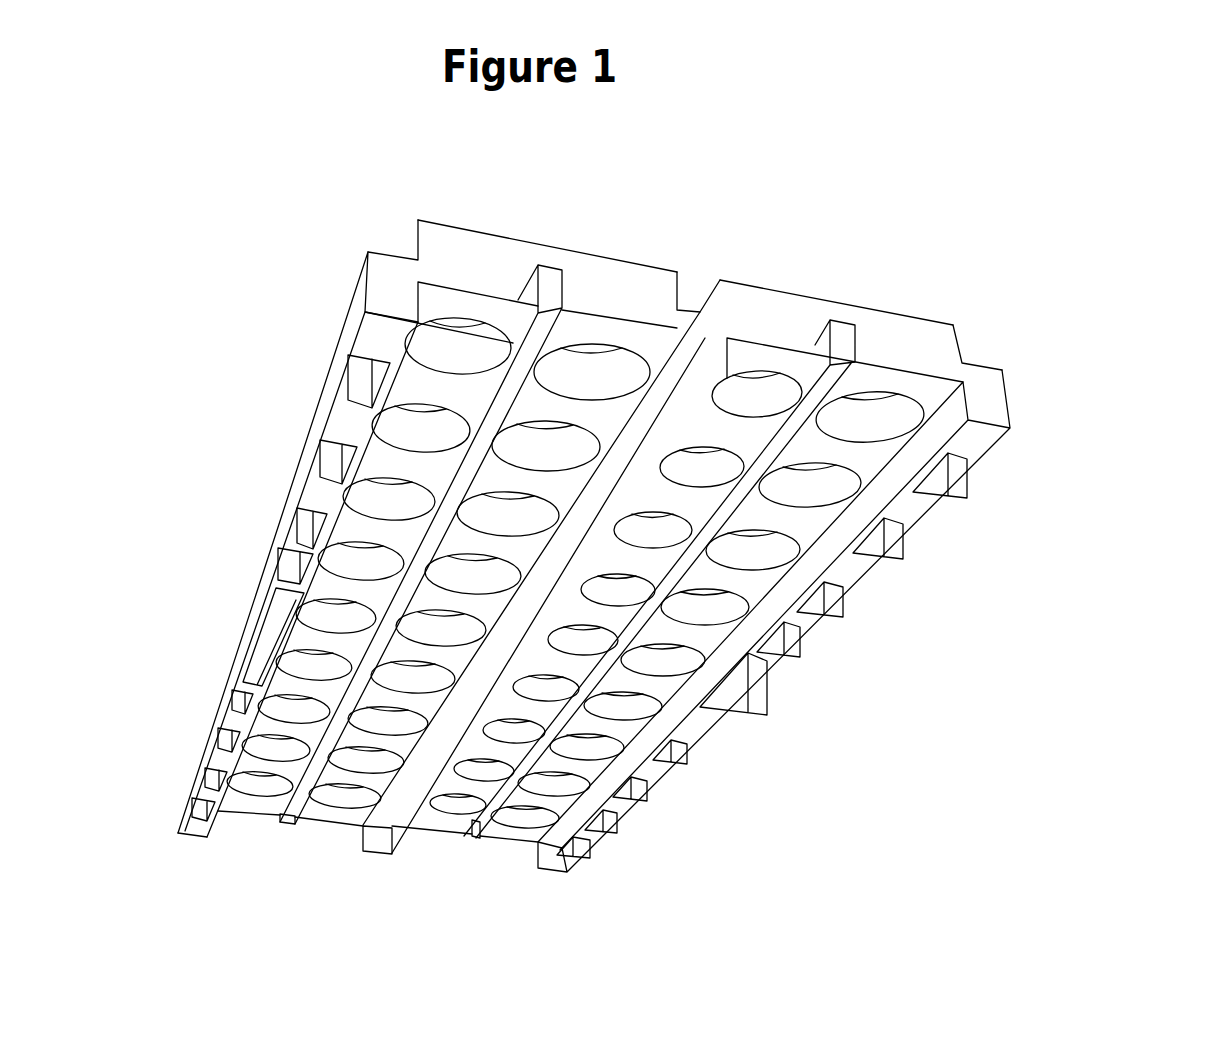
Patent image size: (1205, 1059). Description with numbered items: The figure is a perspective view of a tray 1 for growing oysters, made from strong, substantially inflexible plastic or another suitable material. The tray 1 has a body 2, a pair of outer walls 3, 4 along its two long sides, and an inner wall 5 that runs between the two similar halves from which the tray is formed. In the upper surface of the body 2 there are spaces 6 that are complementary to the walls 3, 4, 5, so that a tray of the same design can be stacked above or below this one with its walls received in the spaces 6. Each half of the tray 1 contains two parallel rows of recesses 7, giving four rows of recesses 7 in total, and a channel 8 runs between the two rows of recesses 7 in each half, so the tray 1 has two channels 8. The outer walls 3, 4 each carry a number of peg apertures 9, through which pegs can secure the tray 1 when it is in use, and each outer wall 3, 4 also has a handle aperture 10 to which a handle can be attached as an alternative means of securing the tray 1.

The tray 1 is at (913, 636).
The body 2 is at (798, 297).
The outer wall 3 is at (376, 282).
The outer wall 4 is at (1002, 386).
The inner wall 5 is at (715, 327).
The spaces 6 is at (396, 227).
The recesses 7 is at (447, 344).
The channel 8 is at (553, 272).
The peg apertures 9 is at (352, 380).
The handle aperture 10 is at (264, 621).